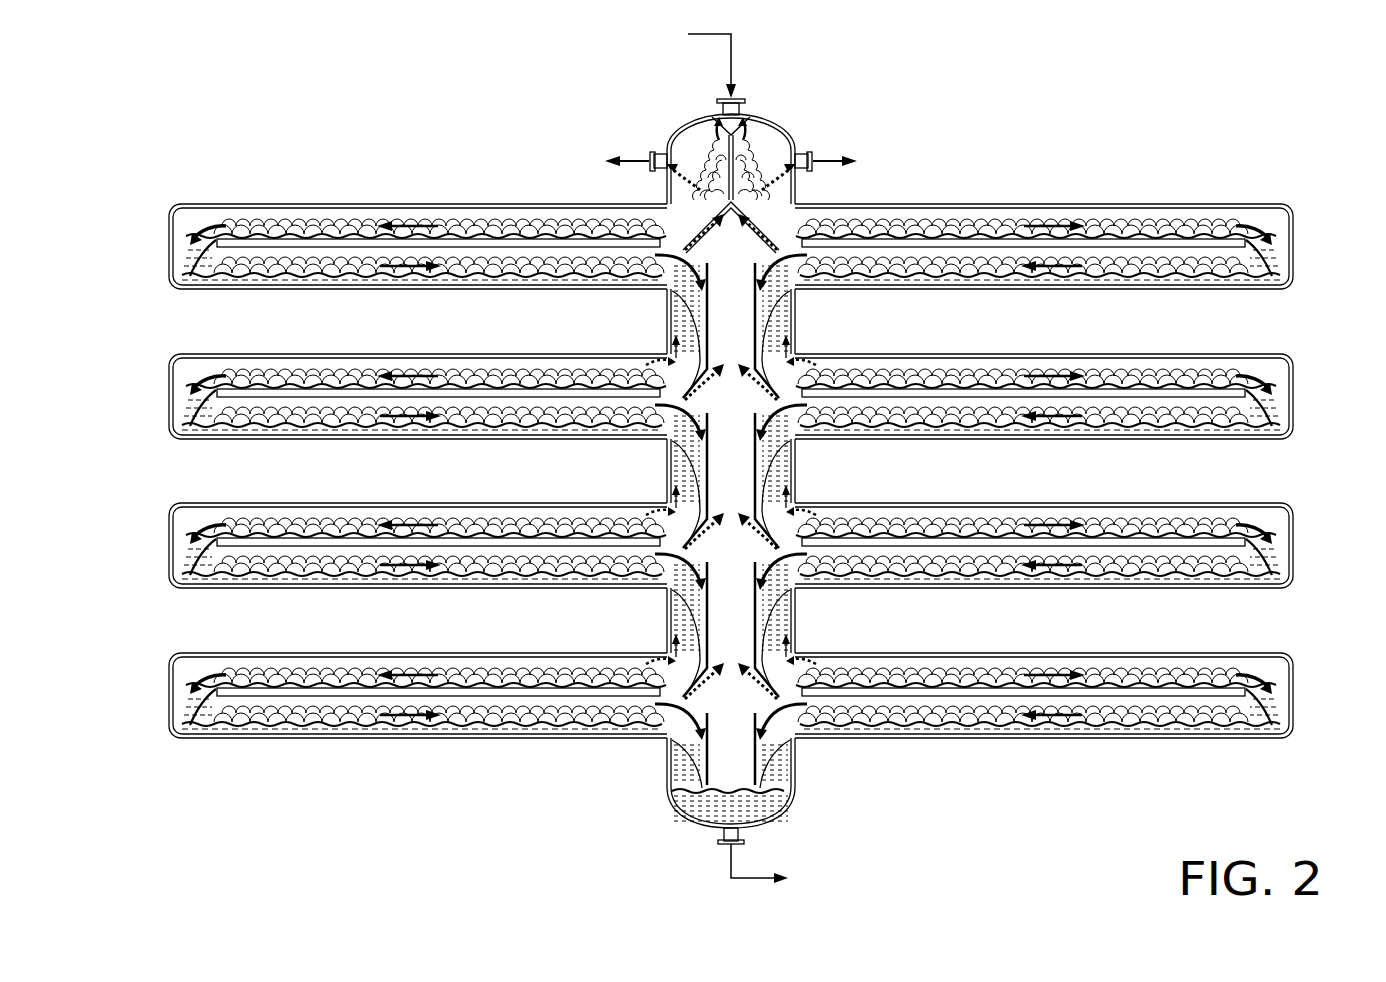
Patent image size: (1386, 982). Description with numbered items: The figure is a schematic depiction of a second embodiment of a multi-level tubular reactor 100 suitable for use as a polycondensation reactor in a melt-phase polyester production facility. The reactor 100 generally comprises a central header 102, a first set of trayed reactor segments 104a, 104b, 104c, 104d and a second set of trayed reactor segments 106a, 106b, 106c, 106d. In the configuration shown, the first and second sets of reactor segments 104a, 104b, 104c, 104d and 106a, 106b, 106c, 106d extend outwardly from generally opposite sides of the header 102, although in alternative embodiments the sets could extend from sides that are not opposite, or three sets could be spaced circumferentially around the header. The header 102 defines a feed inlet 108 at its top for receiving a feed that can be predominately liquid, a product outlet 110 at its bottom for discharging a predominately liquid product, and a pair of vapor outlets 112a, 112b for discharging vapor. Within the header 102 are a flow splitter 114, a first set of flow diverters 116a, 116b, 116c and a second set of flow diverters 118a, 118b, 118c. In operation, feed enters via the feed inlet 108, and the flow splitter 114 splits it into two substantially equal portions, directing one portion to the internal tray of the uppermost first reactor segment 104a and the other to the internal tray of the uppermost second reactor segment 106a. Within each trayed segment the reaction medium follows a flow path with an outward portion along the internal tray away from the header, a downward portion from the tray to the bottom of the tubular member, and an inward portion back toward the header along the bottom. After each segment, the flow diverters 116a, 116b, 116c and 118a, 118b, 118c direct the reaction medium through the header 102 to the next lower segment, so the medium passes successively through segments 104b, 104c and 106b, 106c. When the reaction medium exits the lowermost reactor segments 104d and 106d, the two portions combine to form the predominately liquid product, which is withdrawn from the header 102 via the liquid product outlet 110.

The multi-level tubular reactor 100 is at (730, 451).
The header 102 is at (684, 125).
The uppermost first reactor segment 104a is at (172, 217).
The first reactor segment 104b is at (172, 364).
The first reactor segment 104c is at (172, 517).
The lowermost first reactor segment 104d is at (172, 667).
The uppermost second reactor segment 106a is at (1290, 217).
The second reactor segment 106b is at (1290, 364).
The second reactor segment 106c is at (1290, 517).
The lowermost second reactor segment 106d is at (1290, 667).
The feed inlet 108 is at (720, 100).
The product outlet 110 is at (722, 834).
The vapor outlet 112a is at (655, 151).
The vapor outlet 112b is at (808, 151).
The flow splitter 114 is at (752, 118).
The flow diverter 116a is at (706, 316).
The flow diverter 116b is at (706, 466).
The flow diverter 116c is at (706, 616).
The flow diverter 118a is at (757, 316).
The flow diverter 118b is at (757, 466).
The flow diverter 118c is at (757, 616).